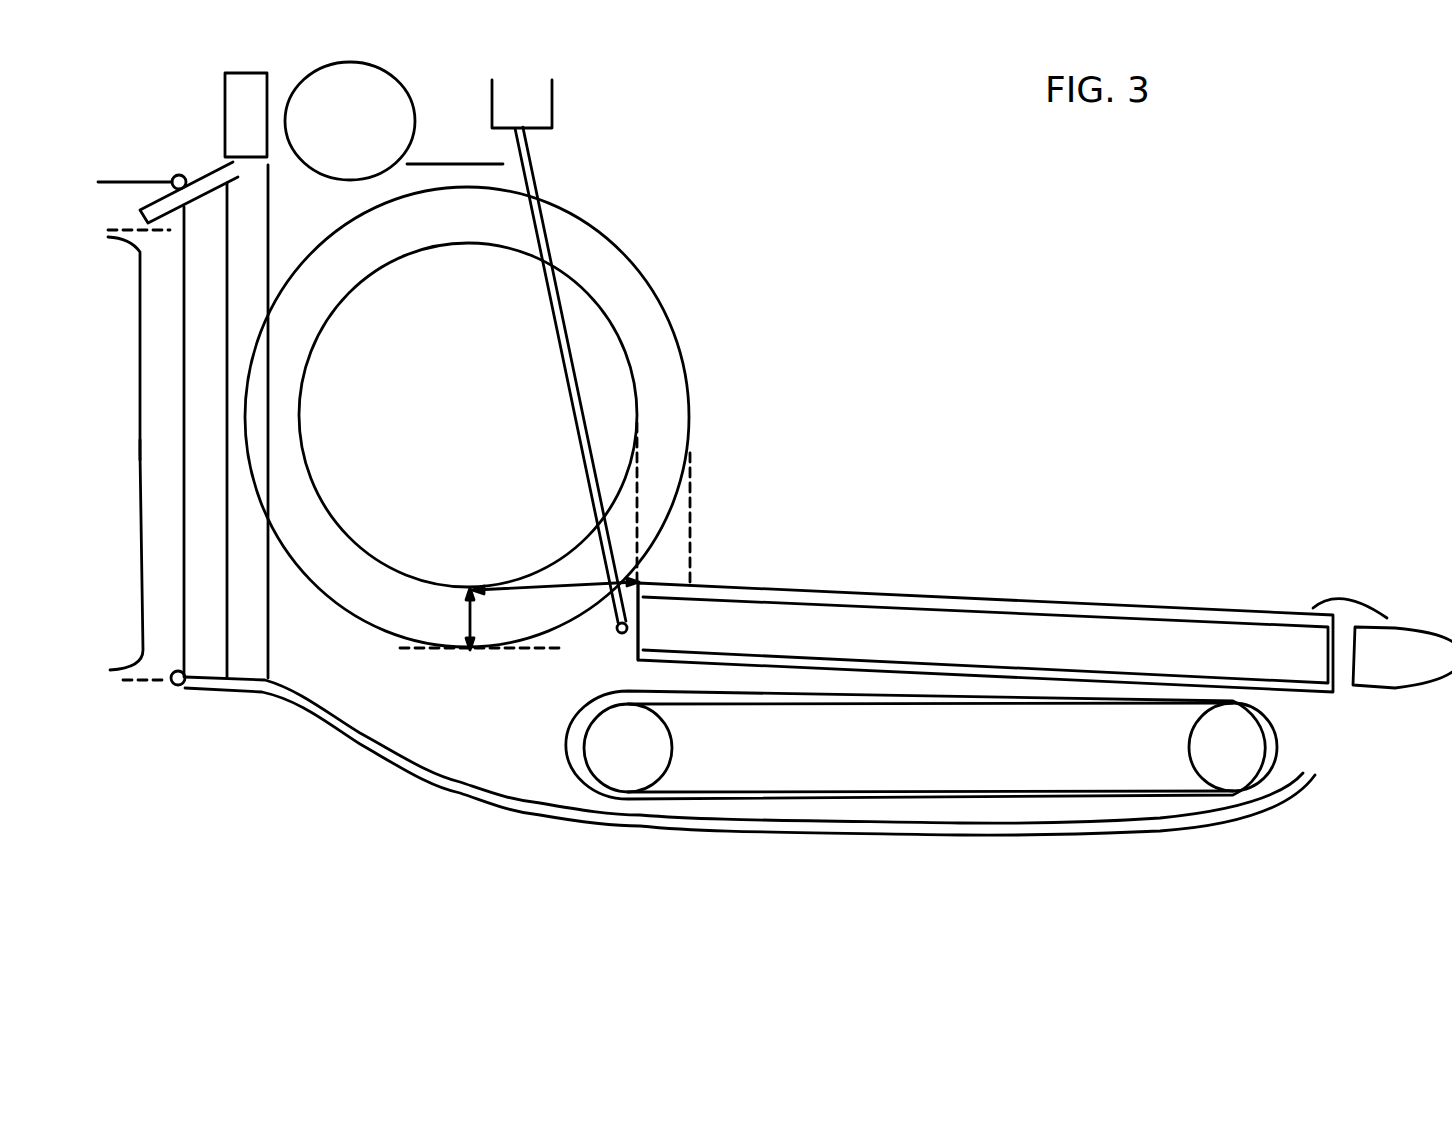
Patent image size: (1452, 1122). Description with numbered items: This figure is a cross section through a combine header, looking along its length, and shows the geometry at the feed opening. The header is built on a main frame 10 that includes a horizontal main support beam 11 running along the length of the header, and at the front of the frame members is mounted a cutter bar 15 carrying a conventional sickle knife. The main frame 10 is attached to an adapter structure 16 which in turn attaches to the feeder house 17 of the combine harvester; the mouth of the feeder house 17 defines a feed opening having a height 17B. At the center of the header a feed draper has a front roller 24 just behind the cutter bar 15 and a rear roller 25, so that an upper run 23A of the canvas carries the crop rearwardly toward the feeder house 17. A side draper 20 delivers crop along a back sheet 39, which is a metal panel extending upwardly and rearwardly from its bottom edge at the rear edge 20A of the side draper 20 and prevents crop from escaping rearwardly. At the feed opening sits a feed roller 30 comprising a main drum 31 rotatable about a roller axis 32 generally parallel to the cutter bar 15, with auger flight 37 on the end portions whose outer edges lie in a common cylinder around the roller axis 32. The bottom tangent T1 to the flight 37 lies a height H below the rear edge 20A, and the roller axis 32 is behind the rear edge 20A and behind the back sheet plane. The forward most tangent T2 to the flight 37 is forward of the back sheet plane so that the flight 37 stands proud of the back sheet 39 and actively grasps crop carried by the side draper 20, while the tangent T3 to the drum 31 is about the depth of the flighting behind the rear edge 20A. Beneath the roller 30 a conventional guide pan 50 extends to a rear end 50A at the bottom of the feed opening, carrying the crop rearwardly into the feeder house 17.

The main frame 10 is at (465, 132).
The horizontal main support beam 11 is at (363, 156).
The cutter bar 15 is at (1388, 555).
The adapter structure 16 is at (257, 632).
The feeder house 17 is at (185, 176).
The height of the feed opening 17B is at (138, 453).
The side draper 20 is at (907, 607).
The rear edge of the side drapers 20A is at (653, 588).
The upper run of the canvas 23A is at (975, 703).
The front roller 24 is at (1242, 758).
The rear roller 25 is at (630, 757).
The feed roller 30 is at (593, 370).
The main drum 31 is at (638, 427).
The roller axis 32 is at (450, 425).
The auger flight 37 is at (598, 265).
The second back sheet 39 is at (537, 178).
The guide pan 50 is at (488, 790).
The rear end of the guide pan 50A is at (180, 690).
The height H is at (477, 616).
The bottom tangent T1 is at (420, 660).
The forward most tangent T2 is at (690, 487).
The tangent to the drum T3 is at (637, 532).